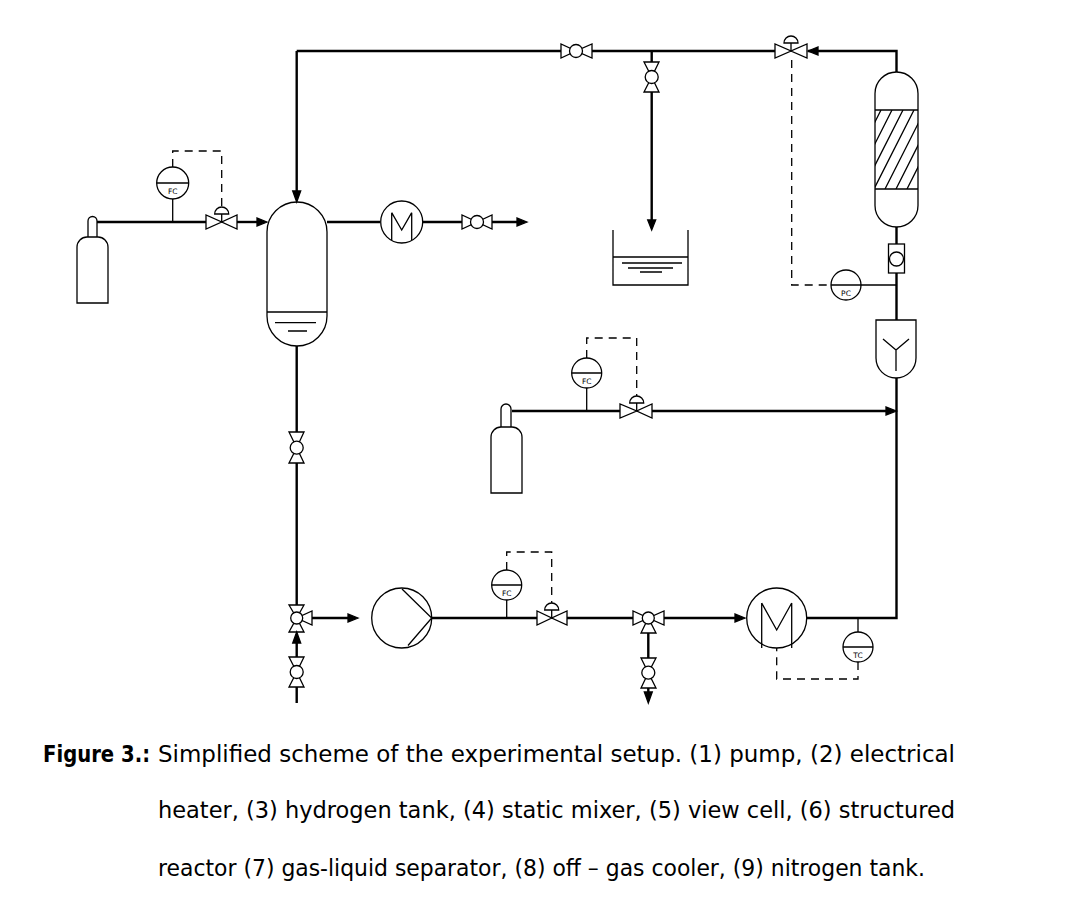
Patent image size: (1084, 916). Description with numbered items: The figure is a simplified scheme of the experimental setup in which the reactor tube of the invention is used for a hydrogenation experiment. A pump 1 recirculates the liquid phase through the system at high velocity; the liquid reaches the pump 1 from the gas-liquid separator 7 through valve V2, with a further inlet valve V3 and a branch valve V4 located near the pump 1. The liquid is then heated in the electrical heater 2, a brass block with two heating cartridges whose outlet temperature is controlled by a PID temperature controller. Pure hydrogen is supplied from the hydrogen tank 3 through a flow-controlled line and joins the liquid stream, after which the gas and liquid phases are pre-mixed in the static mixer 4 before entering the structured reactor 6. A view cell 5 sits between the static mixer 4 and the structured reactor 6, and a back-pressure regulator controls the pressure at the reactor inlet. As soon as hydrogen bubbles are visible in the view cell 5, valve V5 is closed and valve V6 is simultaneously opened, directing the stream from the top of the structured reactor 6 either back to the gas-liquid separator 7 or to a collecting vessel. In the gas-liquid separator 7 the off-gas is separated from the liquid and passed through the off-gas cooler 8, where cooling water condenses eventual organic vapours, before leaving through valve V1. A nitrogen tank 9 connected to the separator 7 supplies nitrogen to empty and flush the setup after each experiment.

The pump 1 is at (402, 601).
The electrical heater 2 is at (777, 600).
The hydrogen tank 3 is at (506, 433).
The static mixer 4 is at (881, 349).
The view cell 5 is at (909, 273).
The structured reactor 6 is at (894, 149).
The gas-liquid separator 7 is at (279, 274).
The off-gas cooler 8 is at (402, 204).
The nitrogen tank 9 is at (92, 246).
The valve V1 is at (477, 209).
The valve V2 is at (280, 447).
The valve V3 is at (280, 667).
The valve V4 is at (631, 668).
The valve V5 is at (576, 41).
The valve V6 is at (668, 77).